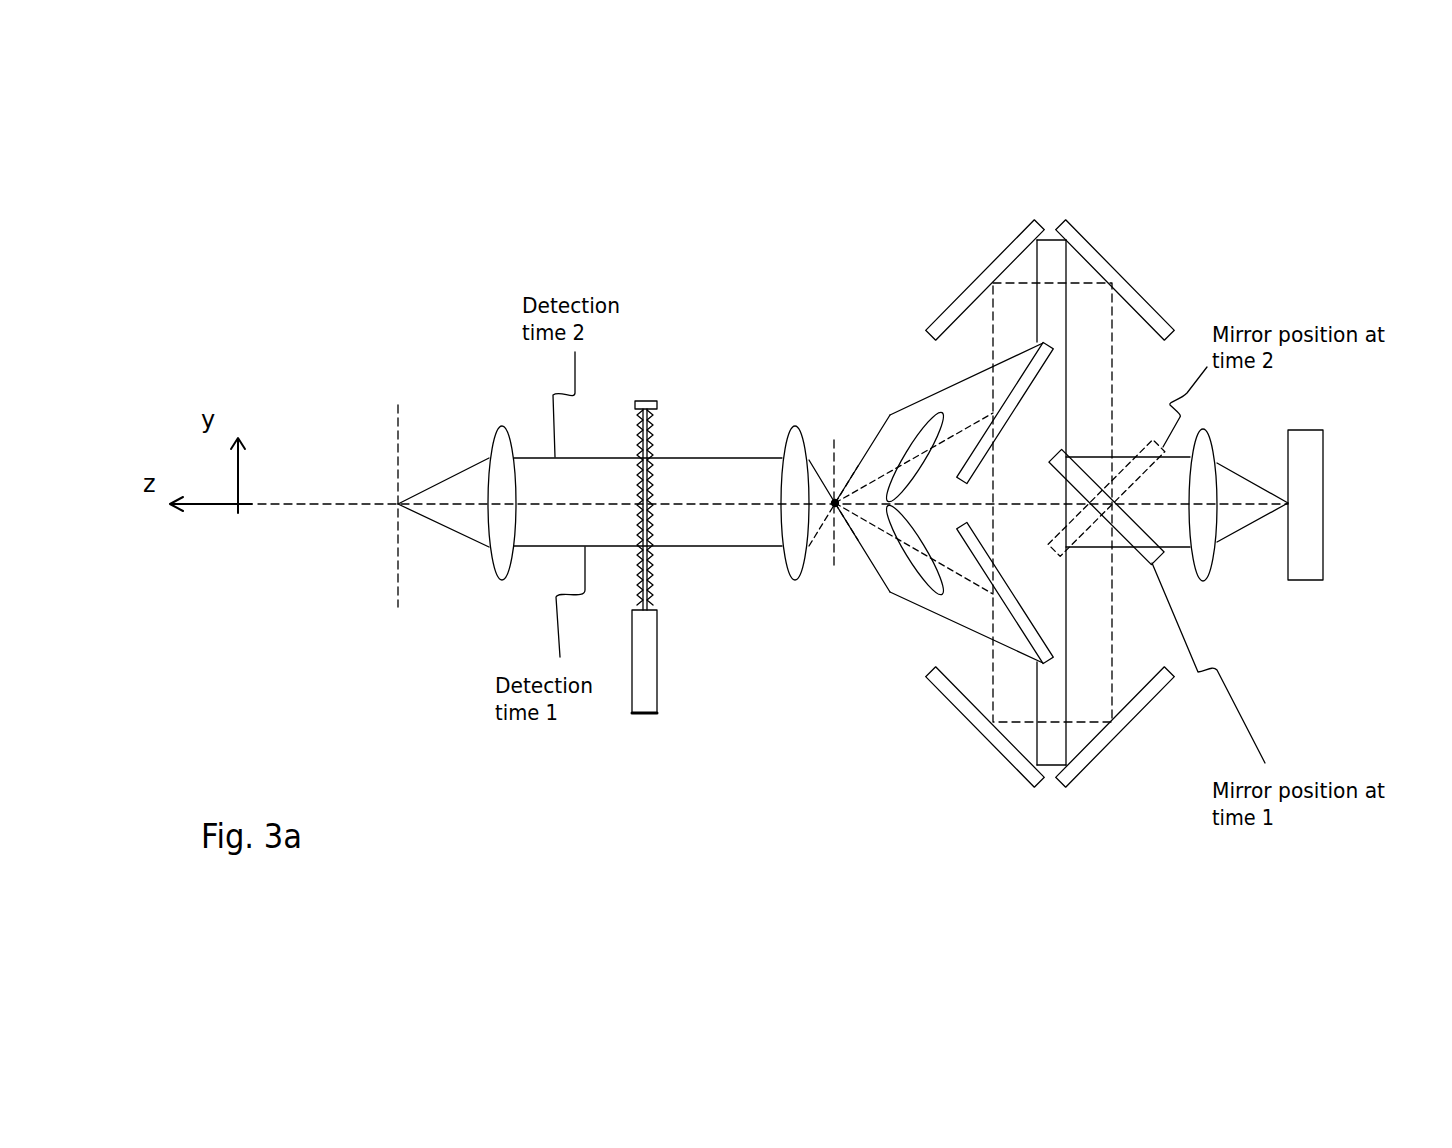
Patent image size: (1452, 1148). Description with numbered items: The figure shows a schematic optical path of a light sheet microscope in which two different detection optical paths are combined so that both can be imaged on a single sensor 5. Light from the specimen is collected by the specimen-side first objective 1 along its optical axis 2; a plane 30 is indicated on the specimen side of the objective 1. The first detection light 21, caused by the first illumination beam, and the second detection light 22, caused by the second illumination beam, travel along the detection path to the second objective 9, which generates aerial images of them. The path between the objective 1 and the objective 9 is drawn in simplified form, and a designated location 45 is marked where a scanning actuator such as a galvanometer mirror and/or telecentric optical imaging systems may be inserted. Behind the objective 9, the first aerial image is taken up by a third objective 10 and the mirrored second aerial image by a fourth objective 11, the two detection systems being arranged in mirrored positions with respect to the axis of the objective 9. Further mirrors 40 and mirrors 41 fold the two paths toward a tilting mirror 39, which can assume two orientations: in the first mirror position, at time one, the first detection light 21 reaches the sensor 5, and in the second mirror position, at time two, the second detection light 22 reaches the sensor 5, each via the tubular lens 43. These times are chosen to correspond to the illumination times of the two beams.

The first objective 1 is at (492, 438).
The optical axis 2 is at (310, 508).
The focal plane 30 is at (398, 580).
The first detection light 21 is at (710, 547).
The second detection light 22 is at (682, 457).
The designated location 45 is at (647, 613).
The second objective 9 is at (795, 425).
The third objective 10 is at (887, 592).
The fourth objective 11 is at (890, 413).
The mirror 40 is at (968, 445).
The mirror 41 is at (1093, 260).
The tilting mirror 39 is at (1143, 450).
The tubular lens 43 is at (1208, 580).
The sensor 5 is at (1323, 468).